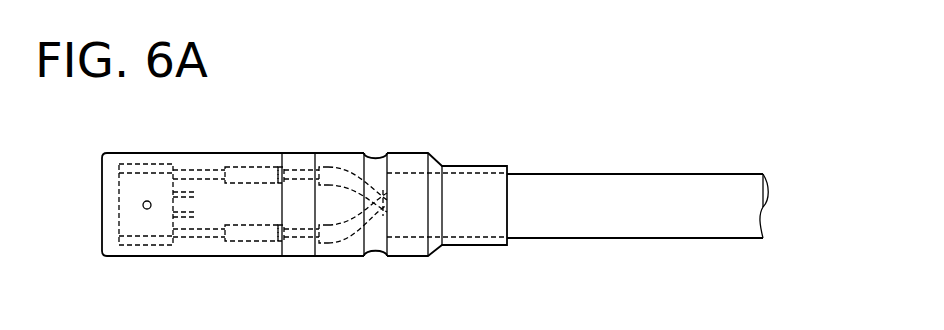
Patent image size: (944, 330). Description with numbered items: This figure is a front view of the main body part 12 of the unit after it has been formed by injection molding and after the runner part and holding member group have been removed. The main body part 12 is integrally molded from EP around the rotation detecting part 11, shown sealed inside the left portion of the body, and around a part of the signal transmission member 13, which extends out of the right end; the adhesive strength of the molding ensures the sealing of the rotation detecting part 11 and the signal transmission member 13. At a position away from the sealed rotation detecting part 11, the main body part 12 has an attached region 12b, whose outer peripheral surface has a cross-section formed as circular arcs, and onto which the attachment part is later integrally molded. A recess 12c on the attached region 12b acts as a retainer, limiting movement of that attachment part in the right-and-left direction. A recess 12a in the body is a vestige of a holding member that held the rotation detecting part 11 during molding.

The rotation detecting part 11 is at (144, 162).
The main body part 12 is at (242, 258).
The recess 12a is at (146, 209).
The attached region 12b is at (500, 147).
The recess 12c is at (375, 257).
The signal transmission member 13 is at (562, 172).